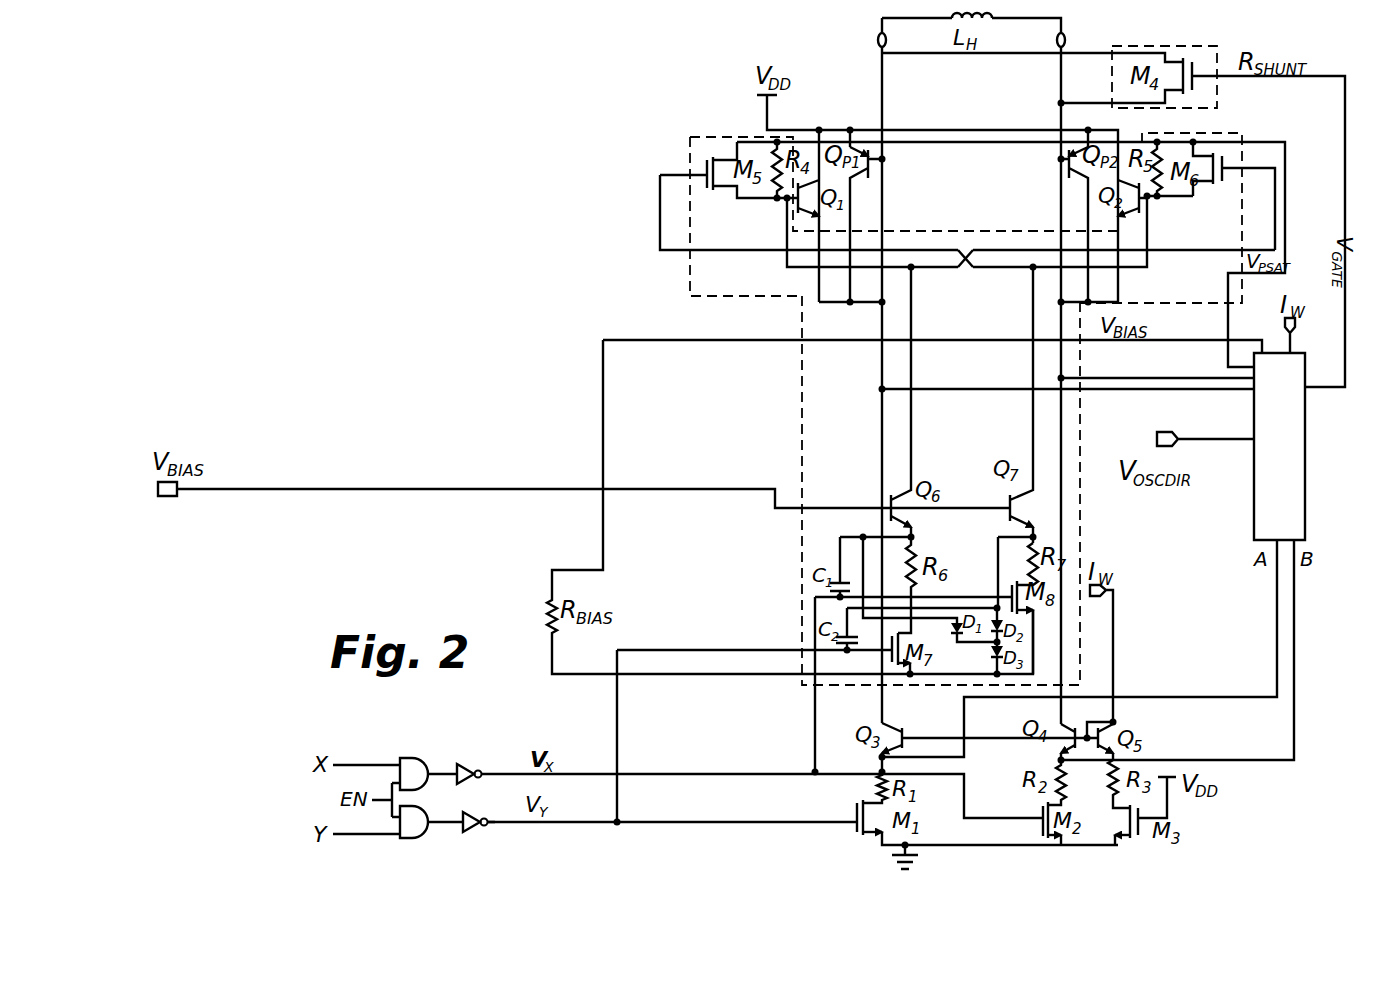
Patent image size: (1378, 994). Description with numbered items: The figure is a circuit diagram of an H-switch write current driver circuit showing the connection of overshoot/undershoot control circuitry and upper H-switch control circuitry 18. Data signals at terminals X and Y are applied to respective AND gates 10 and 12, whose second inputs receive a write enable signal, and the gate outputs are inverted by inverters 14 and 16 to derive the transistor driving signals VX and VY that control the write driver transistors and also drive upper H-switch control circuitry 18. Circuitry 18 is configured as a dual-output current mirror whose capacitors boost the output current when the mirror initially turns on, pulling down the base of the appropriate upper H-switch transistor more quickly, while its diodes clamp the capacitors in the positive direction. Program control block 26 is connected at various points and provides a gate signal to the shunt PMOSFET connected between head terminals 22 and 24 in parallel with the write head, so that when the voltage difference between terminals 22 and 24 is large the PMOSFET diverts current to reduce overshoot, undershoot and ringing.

The AND gate 10 is at (406, 760).
The AND gate 12 is at (410, 840).
The inverter 14 is at (466, 770).
The inverter 16 is at (472, 834).
The upper H-switch control circuitry 18 is at (802, 390).
The head terminal 22 is at (886, 38).
The head terminal 24 is at (1057, 42).
The program control block 26 is at (1254, 508).